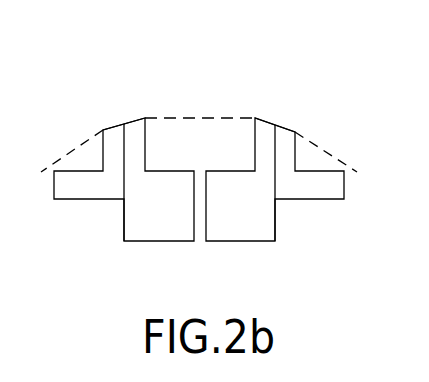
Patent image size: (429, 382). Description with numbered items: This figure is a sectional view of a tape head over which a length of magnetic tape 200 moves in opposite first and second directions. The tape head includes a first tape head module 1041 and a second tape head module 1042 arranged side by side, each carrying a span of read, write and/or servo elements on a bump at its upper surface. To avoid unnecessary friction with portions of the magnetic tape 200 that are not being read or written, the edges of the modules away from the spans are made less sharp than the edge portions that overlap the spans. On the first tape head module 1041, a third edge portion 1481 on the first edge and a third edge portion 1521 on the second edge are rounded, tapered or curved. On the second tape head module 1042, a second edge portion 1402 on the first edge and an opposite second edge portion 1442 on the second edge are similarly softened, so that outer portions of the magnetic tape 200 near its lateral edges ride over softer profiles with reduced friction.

The magnetic tape 200 is at (342, 147).
The first tape head module 1041 is at (151, 251).
The second tape head module 1042 is at (268, 251).
The third edge portion of the second edge of the first module 1521 is at (103, 130).
The third edge portion of the first edge of the first module 1481 is at (145, 118).
The second edge portion of the first edge of the second module 1402 is at (255, 118).
The second edge portion of the second edge of the second module 1442 is at (296, 131).